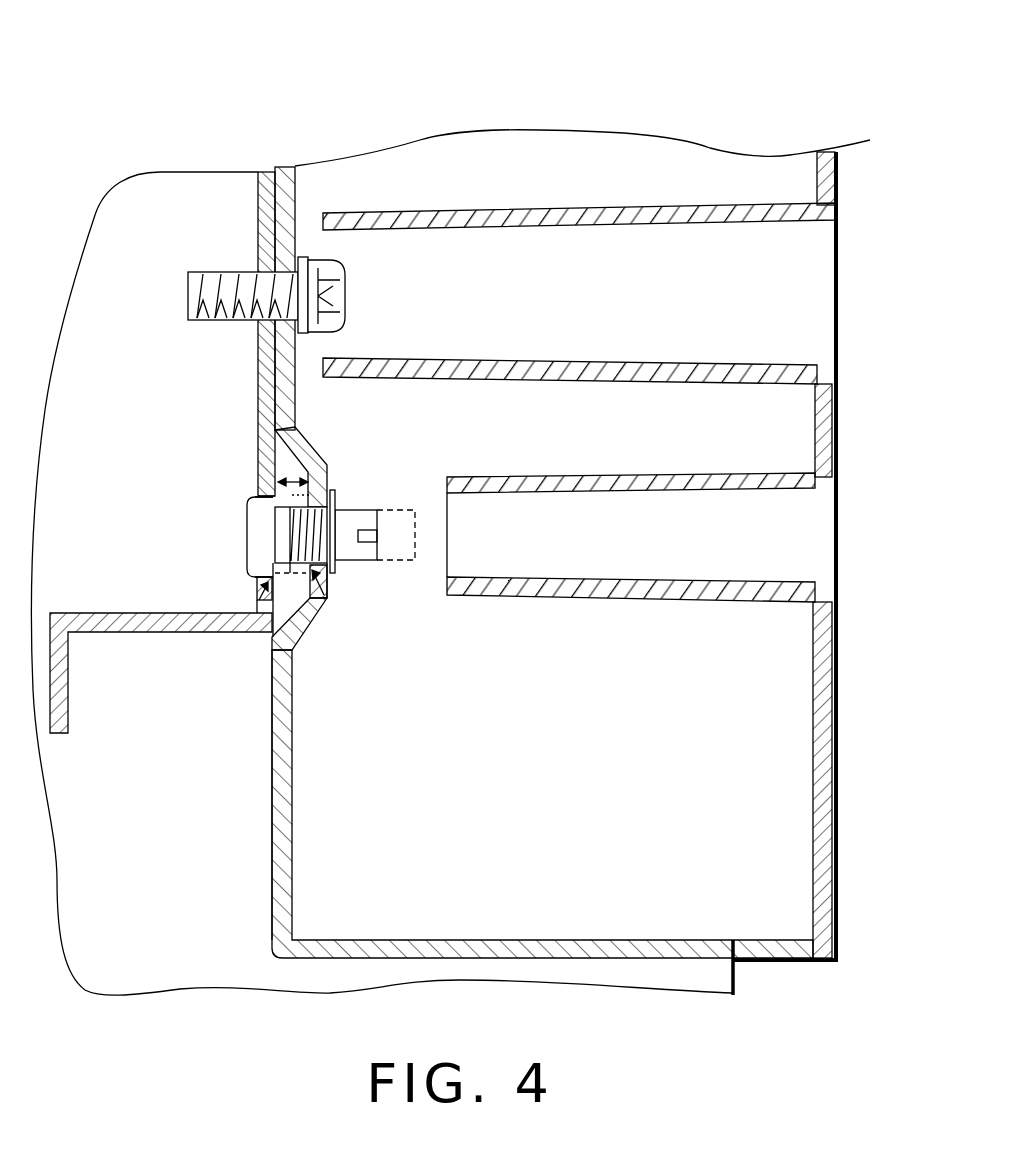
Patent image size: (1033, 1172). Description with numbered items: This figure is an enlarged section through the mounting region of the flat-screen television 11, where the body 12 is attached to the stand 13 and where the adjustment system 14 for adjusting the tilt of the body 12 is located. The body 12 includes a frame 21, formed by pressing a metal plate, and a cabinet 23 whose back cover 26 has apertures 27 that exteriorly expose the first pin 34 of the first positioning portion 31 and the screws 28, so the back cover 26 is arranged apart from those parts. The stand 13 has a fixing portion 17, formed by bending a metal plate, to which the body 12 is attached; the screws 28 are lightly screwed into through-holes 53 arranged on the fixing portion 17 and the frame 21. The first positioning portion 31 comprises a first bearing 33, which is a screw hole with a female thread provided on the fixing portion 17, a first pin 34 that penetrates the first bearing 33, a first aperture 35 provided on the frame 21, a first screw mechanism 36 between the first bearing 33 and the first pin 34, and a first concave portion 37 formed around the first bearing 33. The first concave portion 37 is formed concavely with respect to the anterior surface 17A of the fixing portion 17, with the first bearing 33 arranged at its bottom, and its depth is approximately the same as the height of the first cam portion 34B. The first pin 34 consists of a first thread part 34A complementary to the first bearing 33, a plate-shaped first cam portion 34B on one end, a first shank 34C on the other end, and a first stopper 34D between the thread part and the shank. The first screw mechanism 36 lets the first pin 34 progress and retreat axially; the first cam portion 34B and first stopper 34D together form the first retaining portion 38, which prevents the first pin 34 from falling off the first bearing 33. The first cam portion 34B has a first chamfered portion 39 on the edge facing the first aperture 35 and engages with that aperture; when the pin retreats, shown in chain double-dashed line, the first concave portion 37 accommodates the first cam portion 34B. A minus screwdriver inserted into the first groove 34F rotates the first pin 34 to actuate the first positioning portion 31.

The flat-screen television 11 is at (305, 92).
The body 12 is at (193, 203).
The stand 13 is at (750, 982).
The adjustment system 14 is at (485, 743).
The fixing portion 17 is at (300, 873).
The anterior surface 17A is at (272, 873).
The frame 21 is at (258, 376).
The cabinet 23 is at (836, 808).
The back cover 26 is at (838, 172).
The aperture 27 is at (828, 300).
The screw 28 is at (346, 270).
The first positioning portion 31 is at (390, 628).
The first bearing 33 is at (313, 506).
The first pin 34 is at (226, 535).
The first thread part 34A is at (288, 574).
The first cam portion 34B is at (249, 516).
The first shank 34C is at (358, 517).
The first stopper 34D is at (336, 567).
The first groove 34F is at (366, 537).
The first aperture 35 is at (270, 493).
The first screw mechanism 36 is at (330, 592).
The first concave portion 37 is at (309, 443).
The first retaining portion 38 is at (257, 601).
The first chamfered portion 39 is at (253, 496).
The through-hole 53 is at (273, 265).